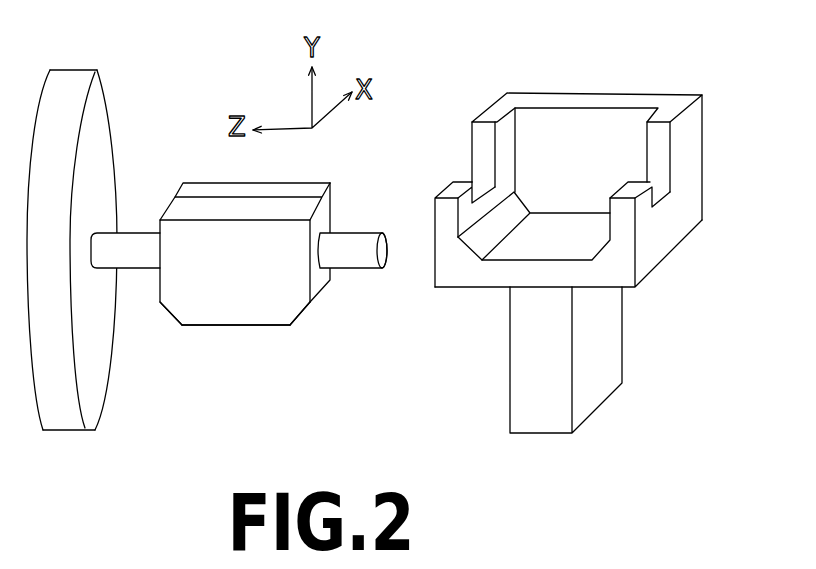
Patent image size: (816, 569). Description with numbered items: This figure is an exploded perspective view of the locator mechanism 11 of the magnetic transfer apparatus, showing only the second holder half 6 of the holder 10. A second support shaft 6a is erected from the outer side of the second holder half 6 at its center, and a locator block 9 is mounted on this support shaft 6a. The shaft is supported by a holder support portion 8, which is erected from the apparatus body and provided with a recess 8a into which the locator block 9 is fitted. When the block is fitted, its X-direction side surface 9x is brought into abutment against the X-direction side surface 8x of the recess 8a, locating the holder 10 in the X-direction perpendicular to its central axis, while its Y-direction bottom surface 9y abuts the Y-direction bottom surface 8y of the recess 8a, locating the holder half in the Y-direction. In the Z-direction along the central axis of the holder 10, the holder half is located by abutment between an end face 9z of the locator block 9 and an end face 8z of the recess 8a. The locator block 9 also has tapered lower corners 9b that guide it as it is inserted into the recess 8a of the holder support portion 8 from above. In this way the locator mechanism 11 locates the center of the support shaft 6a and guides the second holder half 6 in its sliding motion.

The second holder half 6 is at (62, 78).
The second support shaft 6a is at (363, 260).
The holder support portion 8 is at (567, 231).
The recess 8a is at (525, 132).
The X-direction side surface of the recess 8x is at (592, 127).
The Y-direction bottom surface of the recess 8y is at (563, 250).
The end face of the recess 8z is at (505, 173).
The locator block 9 is at (272, 272).
The tapered lower corners 9b is at (173, 317).
The X-direction side surface of the locator block 9x is at (332, 203).
The Y-direction bottom surface of the locator block 9y is at (268, 327).
The end face of the locator block 9z is at (160, 222).
The holder 10 is at (93, 216).
The locator mechanism 11 is at (373, 377).